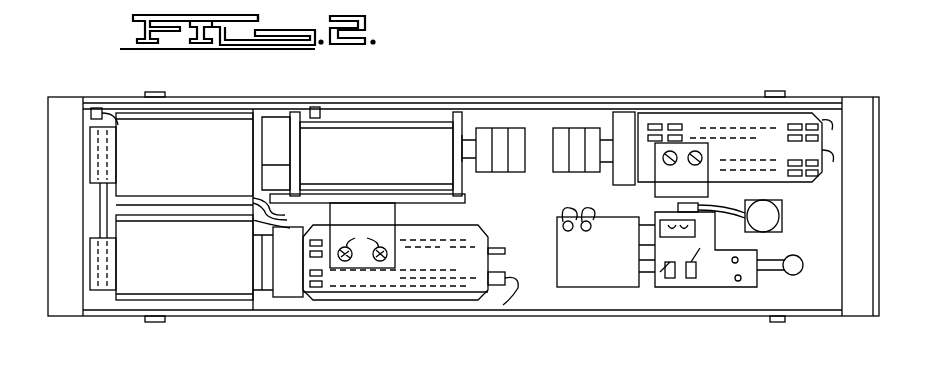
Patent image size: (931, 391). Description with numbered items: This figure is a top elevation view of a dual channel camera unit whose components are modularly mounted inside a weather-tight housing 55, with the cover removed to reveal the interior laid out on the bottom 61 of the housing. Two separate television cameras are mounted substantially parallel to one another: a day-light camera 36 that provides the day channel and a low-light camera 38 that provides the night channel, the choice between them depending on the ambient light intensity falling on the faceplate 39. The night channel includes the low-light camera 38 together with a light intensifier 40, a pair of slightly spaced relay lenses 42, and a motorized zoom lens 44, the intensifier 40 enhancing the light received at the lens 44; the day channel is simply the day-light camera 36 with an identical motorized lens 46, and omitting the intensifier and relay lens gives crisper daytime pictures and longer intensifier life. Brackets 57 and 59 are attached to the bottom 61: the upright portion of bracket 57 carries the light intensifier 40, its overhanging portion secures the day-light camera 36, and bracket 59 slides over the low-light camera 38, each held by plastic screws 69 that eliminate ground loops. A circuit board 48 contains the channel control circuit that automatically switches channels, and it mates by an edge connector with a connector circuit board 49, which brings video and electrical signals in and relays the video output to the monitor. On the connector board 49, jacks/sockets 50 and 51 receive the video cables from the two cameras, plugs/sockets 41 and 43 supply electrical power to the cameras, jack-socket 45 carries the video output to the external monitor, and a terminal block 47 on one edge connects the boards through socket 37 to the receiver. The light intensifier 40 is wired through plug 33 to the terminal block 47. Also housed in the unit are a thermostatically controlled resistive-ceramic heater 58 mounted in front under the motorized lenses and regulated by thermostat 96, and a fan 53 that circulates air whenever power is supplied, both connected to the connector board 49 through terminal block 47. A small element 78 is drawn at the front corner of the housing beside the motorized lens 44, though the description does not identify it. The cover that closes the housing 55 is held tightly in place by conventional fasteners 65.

The faceplate 39 is at (60, 108).
The terminal block 78 is at (100, 108).
The fasteners 65 is at (168, 96).
The plug 33 is at (317, 106).
The relay lenses 42 is at (572, 128).
The bracket 59 is at (670, 152).
The housing 55 is at (746, 88).
The motorized lens 44 is at (185, 160).
The heater 58 is at (104, 198).
The motorized lens 46 is at (185, 267).
The light intensifier 40 is at (410, 160).
The bracket 57 is at (400, 218).
The day-light camera 36 is at (450, 260).
The screws 69 is at (663, 160).
The circuit board 48 is at (620, 264).
The jack/socket 50 is at (518, 290).
The bottom 61 is at (545, 300).
The low-light camera 38 is at (765, 160).
The terminal block 47 is at (688, 203).
The jack/socket 51 is at (702, 206).
The fan 53 is at (773, 224).
The connector circuit board 49 is at (720, 277).
The plug/socket 41 is at (492, 252).
The plug/socket 43 is at (836, 118).
The thermostat 96 is at (735, 264).
The jack-socket 45 is at (738, 282).
The socket 37 is at (793, 276).